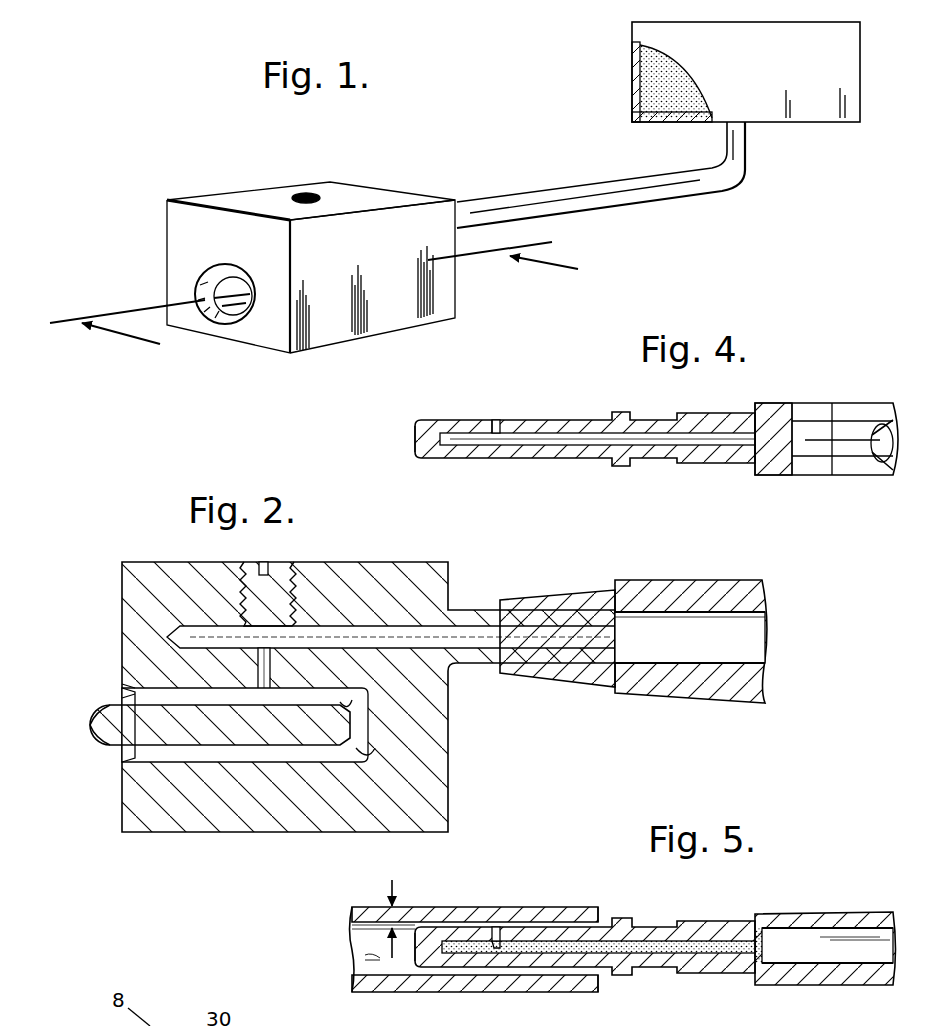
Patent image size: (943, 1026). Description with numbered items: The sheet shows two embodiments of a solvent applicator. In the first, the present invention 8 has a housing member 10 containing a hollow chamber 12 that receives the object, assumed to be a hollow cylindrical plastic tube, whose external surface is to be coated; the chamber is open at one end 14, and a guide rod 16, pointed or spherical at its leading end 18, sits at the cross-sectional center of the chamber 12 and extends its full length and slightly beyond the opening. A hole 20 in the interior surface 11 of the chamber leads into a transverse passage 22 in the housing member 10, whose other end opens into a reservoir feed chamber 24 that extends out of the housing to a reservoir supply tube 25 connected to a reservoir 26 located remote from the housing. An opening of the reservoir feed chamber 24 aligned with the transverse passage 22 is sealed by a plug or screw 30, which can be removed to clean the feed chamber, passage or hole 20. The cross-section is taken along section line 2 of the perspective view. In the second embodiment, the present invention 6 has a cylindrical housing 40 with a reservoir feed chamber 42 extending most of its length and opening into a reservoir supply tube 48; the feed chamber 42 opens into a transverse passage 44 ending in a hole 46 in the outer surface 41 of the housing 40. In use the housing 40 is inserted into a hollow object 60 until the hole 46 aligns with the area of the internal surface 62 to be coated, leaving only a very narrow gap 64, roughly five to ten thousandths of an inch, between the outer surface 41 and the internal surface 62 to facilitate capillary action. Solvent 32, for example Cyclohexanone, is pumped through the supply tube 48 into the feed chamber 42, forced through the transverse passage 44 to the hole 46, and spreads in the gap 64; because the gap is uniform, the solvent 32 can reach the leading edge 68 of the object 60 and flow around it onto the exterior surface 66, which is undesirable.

In FIG. 1, the section line 2— 2 is at (330, 302).
In FIG. 4, the second embodiment of the present invention 6 is at (670, 475).
In FIG. 5, the second embodiment of the present invention 6 is at (668, 980).
In FIG. 1, the present invention 8 is at (478, 304).
In FIG. 2, the present invention 8 is at (104, 548).
In FIG. 1, the housing member 10 is at (333, 270).
In FIG. 2, the housing member 10 is at (198, 833).
In FIG. 2, the interior surface 11 is at (372, 758).
In FIG. 1, the hollow chamber 12 is at (232, 283).
In FIG. 2, the hollow chamber 12 is at (168, 690).
In FIG. 2, the open end 14 is at (122, 763).
In FIG. 1, the guide rod 16 is at (240, 312).
In FIG. 2, the guide rod 16 is at (209, 735).
In FIG. 1, the leading end 18 is at (212, 296).
In FIG. 2, the leading end 18 is at (92, 722).
In FIG. 2, the hole 20 is at (350, 702).
In FIG. 2, the transverse passage 22 is at (262, 676).
In FIG. 2, the reservoir feed chamber 24 is at (348, 630).
In FIG. 1, the reservoir supply tube 25 is at (563, 188).
In FIG. 2, the reservoir supply tube 25 is at (698, 628).
In FIG. 1, the reservoir 26 is at (818, 108).
In FIG. 1, the plug or screw 30 is at (298, 193).
In FIG. 2, the plug or screw 30 is at (283, 573).
In FIG. 1, the solvent 32 is at (650, 90).
In FIG. 5, the solvent 32 is at (733, 953).
In FIG. 4, the housing 40 is at (510, 459).
In FIG. 5, the housing 40 is at (500, 968).
In FIG. 4, the outer surface 41 is at (456, 420).
In FIG. 5, the outer surface 41 is at (455, 927).
In FIG. 4, the reservoir feed chamber 42 is at (572, 440).
In FIG. 5, the reservoir feed chamber 42 is at (700, 947).
In FIG. 4, the transverse passage 44 is at (500, 425).
In FIG. 5, the transverse passage 44 is at (492, 936).
In FIG. 4, the hole 46 is at (492, 428).
In FIG. 4, the reservoir supply tube 48 is at (798, 437).
In FIG. 5, the reservoir supply tube 48 is at (832, 936).
In FIG. 5, the object 60 is at (540, 895).
In FIG. 5, the internal surface 62 is at (378, 955).
In FIG. 5, the gap 64 is at (394, 895).
In FIG. 5, the exterior surface 66 is at (575, 906).
In FIG. 5, the leading edge 68 is at (600, 910).